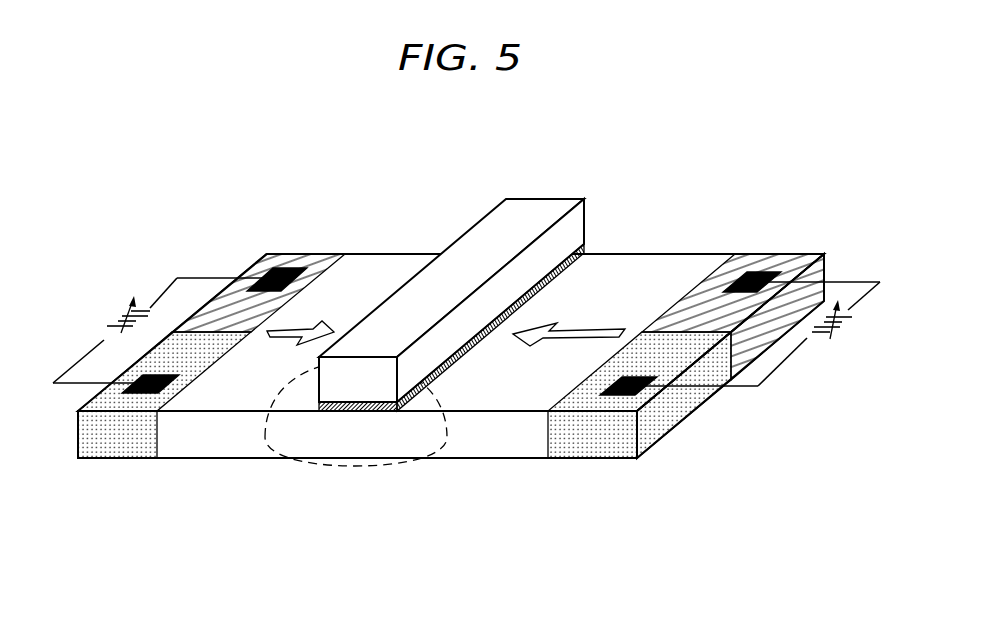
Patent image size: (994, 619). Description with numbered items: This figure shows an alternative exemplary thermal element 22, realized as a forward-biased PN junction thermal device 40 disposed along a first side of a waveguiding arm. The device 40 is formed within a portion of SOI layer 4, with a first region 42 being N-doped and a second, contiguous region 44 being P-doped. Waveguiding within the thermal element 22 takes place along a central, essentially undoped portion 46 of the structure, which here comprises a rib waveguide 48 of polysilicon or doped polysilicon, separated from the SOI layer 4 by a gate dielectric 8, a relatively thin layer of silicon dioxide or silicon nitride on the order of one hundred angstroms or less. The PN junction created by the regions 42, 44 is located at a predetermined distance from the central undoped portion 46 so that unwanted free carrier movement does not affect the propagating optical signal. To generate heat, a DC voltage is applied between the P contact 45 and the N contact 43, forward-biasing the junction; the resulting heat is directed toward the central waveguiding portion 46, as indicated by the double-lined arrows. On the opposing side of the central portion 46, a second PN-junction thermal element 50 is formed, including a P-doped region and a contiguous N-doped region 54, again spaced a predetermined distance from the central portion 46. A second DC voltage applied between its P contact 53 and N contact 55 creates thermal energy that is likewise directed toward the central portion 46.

The thermal element 22 is at (626, 134).
The SOI layer 4 is at (652, 258).
The forward-biased PN junction thermal device 40 is at (435, 481).
The rib waveguide 48 is at (542, 201).
The gate dielectric 8 is at (590, 247).
The second PN-junction thermal element 50 is at (278, 246).
The N-doped region 54 is at (116, 459).
The second region (P-doped) 44 is at (782, 257).
The first region (N-doped) 42 is at (612, 459).
The central undoped portion 46 is at (341, 467).
The P contact 53 is at (303, 277).
The N contact 55 is at (168, 385).
The P contact 45 is at (737, 283).
The N contact 43 is at (601, 382).